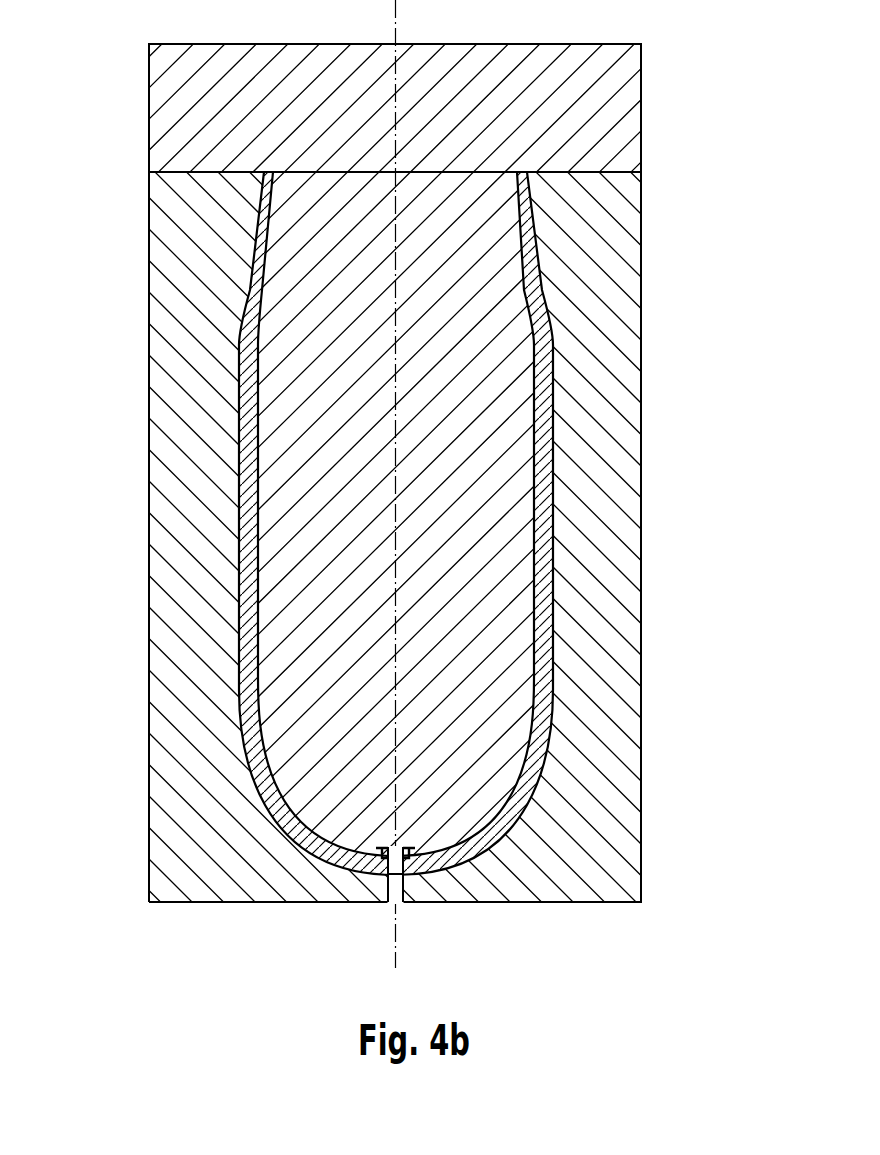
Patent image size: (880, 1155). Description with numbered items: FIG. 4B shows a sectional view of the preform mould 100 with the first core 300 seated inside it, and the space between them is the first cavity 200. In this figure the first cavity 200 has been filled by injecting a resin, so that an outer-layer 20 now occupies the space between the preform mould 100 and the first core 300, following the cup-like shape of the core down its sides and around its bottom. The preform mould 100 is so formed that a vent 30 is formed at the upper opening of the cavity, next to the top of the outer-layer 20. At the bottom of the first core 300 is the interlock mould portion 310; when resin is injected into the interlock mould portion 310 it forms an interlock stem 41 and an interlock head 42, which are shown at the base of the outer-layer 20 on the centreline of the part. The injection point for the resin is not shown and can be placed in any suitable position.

The preform mould 100 is at (590, 395).
The first cavity 200 is at (540, 507).
The outer-layer 20 is at (545, 566).
The first core 300 is at (468, 638).
The vent 30 is at (267, 190).
The interlock stem 41 is at (363, 870).
The interlock head 42 is at (383, 846).
The interlock mould portion 310 is at (427, 855).